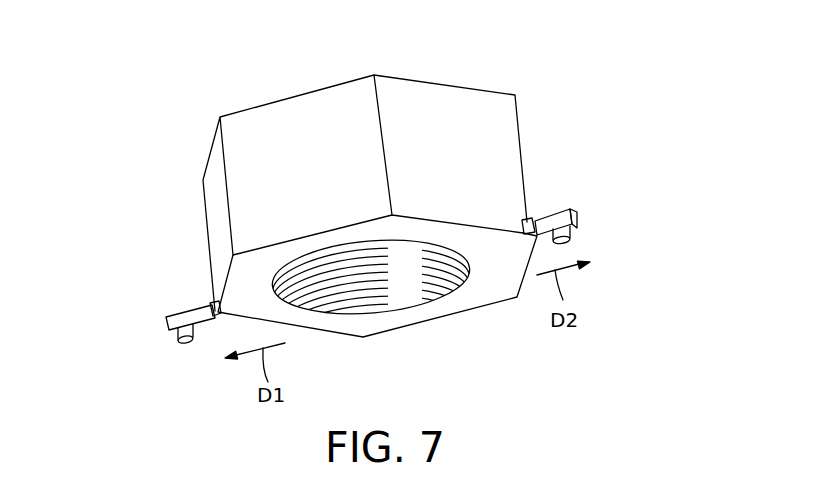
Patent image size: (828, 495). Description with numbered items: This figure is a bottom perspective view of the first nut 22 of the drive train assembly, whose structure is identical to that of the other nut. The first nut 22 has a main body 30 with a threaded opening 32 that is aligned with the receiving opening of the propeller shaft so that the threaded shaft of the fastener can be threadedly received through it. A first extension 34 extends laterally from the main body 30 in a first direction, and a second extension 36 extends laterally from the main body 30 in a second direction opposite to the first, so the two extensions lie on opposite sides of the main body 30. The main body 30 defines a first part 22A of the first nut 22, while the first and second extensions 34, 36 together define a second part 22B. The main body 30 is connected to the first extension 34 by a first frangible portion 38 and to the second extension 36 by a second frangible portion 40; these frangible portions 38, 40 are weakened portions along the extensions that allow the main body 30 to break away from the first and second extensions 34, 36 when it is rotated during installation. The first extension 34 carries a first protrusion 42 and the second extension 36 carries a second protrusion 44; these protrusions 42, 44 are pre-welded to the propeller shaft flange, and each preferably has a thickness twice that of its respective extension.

The first nut 22 is at (370, 227).
The first part 22A is at (492, 279).
The second part 22B is at (370, 252).
The main body 30 is at (473, 140).
The threaded opening 32 is at (440, 272).
The first extension 34 is at (187, 318).
The second extension 36 is at (560, 210).
The first frangible portion 38 is at (208, 302).
The second frangible portion 40 is at (531, 222).
The first protrusion 42 is at (180, 338).
The second protrusion 44 is at (590, 237).